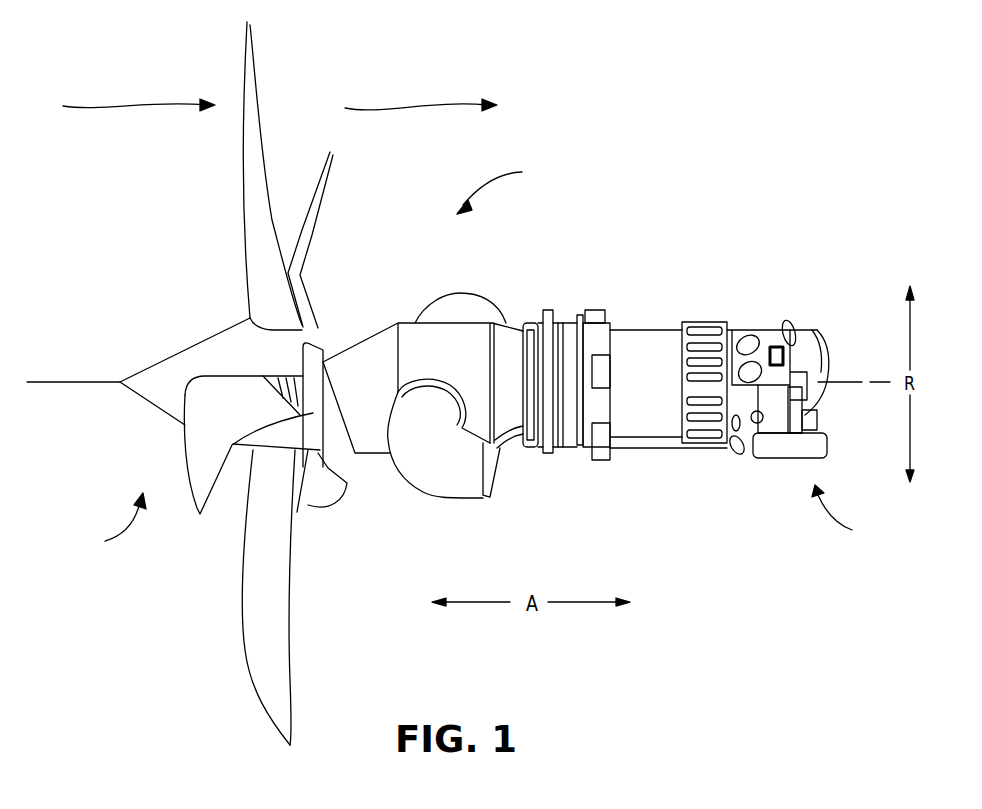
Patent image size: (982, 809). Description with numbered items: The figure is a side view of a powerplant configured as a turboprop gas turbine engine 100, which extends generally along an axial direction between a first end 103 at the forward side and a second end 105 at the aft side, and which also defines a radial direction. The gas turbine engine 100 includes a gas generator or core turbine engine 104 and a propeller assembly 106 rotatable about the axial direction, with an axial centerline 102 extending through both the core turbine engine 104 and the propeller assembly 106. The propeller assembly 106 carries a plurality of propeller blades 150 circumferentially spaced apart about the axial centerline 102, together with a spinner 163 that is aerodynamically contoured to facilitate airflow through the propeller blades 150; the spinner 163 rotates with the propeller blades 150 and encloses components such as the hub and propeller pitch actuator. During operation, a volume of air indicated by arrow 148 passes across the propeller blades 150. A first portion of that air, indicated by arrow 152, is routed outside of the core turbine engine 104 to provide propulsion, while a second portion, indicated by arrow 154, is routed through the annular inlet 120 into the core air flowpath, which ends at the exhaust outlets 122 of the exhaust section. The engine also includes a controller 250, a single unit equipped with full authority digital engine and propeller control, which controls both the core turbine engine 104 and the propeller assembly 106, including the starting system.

The gas turbine engine 100 is at (508, 185).
The axial centerline 102 is at (75, 382).
The first end 103 is at (105, 526).
The core turbine engine 104 is at (617, 270).
The second end 105 is at (850, 514).
The propeller assembly 106 is at (186, 270).
The annular inlet 120 is at (665, 412).
The exhaust outlets 122 is at (455, 296).
The volume of air 148 is at (130, 104).
The propeller blades 150 is at (253, 686).
The first portion of air 152 is at (413, 103).
The second portion of air 154 is at (696, 300).
The spinner 163 is at (173, 347).
The controller 250 is at (780, 448).